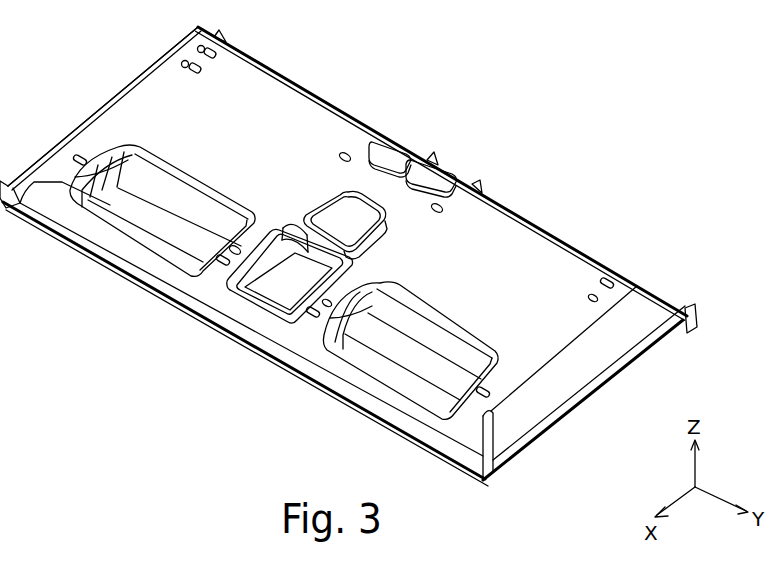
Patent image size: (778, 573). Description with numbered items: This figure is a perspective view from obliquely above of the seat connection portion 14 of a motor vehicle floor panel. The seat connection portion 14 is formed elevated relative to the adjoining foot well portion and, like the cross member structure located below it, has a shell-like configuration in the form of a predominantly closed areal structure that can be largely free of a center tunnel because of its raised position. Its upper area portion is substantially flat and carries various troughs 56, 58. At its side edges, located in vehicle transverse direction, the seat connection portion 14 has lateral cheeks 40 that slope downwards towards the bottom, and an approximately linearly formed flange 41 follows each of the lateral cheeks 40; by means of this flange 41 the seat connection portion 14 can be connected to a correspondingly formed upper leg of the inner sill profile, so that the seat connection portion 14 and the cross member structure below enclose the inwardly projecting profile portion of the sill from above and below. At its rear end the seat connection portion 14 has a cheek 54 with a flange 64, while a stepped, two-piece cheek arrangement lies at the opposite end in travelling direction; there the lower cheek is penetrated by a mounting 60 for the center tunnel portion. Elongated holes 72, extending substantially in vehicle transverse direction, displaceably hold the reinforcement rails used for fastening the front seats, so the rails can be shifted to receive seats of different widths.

The seat connection portion 14 is at (208, 370).
The lateral cheeks 40 is at (647, 313).
The flange 41 is at (73, 132).
The cheek 54 is at (148, 257).
The trough 56 is at (296, 222).
The trough 58 is at (164, 180).
The mounting 60 is at (462, 172).
The flange 64 is at (370, 407).
The elongated holes 72 is at (352, 151).